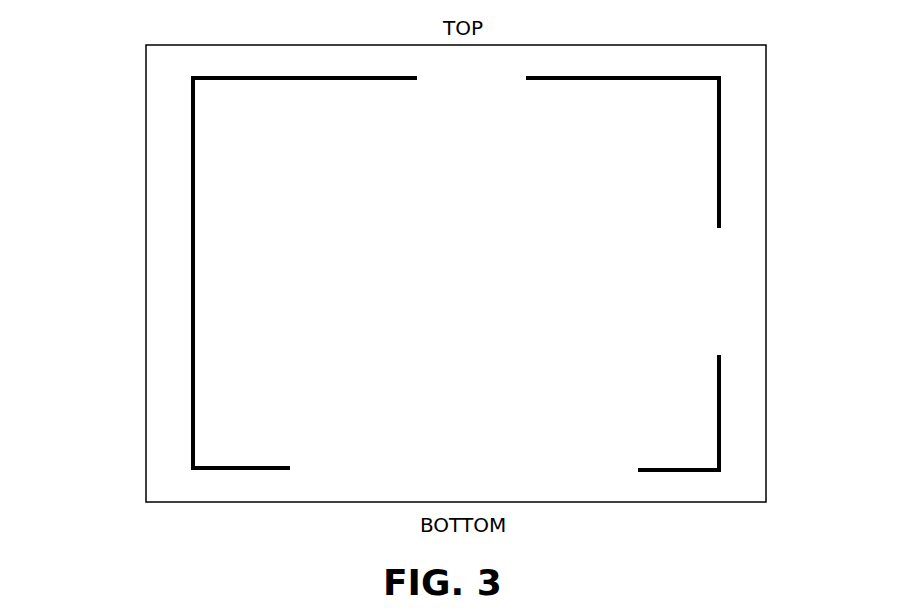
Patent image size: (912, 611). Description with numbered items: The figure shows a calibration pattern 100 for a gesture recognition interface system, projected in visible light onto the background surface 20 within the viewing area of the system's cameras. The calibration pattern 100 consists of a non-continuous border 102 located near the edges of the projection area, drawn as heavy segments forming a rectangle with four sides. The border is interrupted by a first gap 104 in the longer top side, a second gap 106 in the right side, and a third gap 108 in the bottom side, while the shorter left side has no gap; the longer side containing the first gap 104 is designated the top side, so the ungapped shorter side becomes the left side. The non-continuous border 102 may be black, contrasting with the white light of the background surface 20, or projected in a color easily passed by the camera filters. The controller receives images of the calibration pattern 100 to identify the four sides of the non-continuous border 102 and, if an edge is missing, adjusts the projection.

The calibration pattern 100 is at (106, 52).
The background surface 20 is at (484, 283).
The non-continuous border 102 is at (193, 308).
The first gap 104 is at (489, 77).
The second gap 106 is at (721, 289).
The third gap 108 is at (526, 474).